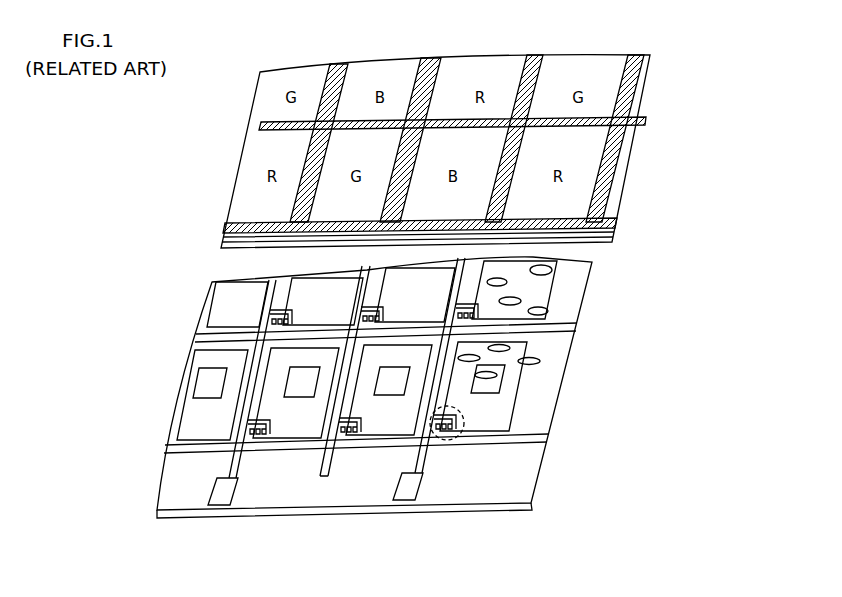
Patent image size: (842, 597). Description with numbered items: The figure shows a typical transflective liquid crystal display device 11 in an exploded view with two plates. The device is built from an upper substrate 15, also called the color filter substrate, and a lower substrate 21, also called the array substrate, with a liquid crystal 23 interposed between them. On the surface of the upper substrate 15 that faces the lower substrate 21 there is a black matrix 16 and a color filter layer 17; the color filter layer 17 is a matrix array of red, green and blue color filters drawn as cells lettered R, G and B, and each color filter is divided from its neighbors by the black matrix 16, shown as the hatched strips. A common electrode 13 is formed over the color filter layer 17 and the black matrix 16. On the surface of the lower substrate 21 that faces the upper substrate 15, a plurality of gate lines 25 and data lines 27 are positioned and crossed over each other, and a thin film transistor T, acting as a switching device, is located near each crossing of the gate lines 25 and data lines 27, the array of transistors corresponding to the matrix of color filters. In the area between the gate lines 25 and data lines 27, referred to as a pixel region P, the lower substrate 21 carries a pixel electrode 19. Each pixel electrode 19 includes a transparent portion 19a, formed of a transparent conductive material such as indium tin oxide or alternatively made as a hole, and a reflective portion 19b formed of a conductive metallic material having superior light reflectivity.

The transflective liquid crystal display device 11 is at (444, 409).
The common electrode 13 is at (612, 235).
The upper substrate 15 is at (613, 227).
The black matrix 16 is at (640, 122).
The color filter layer 17 is at (616, 157).
The pixel electrode 19 is at (510, 416).
The transparent portion 19a is at (493, 383).
The reflective portion 19b is at (508, 398).
The pixel region P is at (537, 396).
The lower substrate 21 is at (510, 510).
The liquid crystal 23 is at (540, 303).
The gate line 25 is at (518, 445).
The data line 27 is at (390, 478).
The thin film transistor T is at (452, 440).